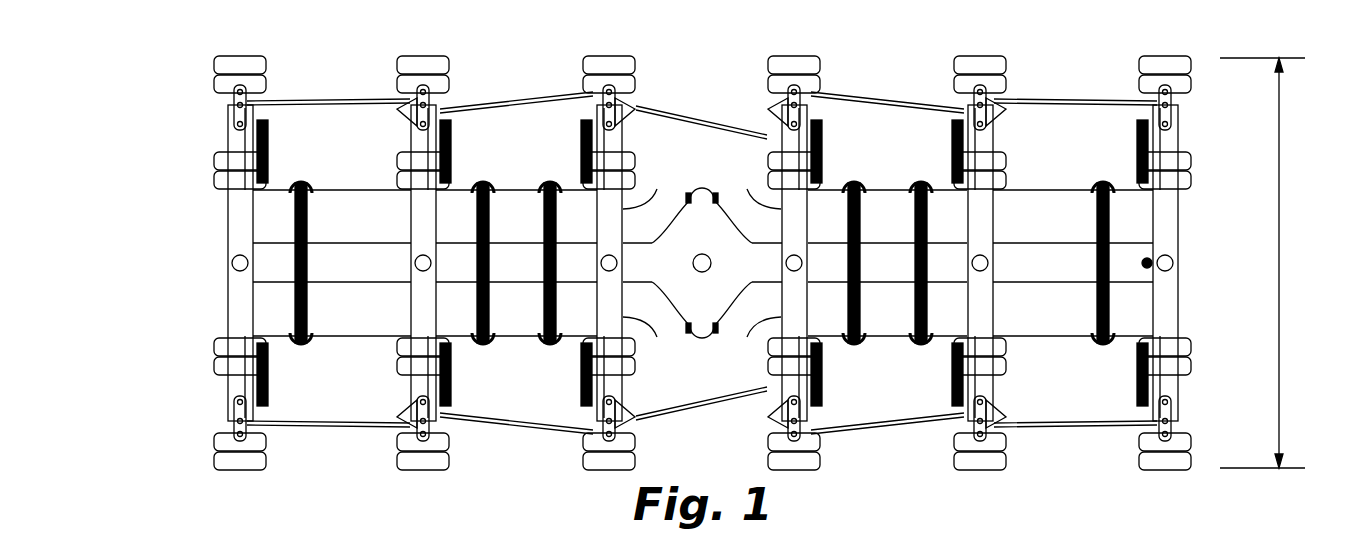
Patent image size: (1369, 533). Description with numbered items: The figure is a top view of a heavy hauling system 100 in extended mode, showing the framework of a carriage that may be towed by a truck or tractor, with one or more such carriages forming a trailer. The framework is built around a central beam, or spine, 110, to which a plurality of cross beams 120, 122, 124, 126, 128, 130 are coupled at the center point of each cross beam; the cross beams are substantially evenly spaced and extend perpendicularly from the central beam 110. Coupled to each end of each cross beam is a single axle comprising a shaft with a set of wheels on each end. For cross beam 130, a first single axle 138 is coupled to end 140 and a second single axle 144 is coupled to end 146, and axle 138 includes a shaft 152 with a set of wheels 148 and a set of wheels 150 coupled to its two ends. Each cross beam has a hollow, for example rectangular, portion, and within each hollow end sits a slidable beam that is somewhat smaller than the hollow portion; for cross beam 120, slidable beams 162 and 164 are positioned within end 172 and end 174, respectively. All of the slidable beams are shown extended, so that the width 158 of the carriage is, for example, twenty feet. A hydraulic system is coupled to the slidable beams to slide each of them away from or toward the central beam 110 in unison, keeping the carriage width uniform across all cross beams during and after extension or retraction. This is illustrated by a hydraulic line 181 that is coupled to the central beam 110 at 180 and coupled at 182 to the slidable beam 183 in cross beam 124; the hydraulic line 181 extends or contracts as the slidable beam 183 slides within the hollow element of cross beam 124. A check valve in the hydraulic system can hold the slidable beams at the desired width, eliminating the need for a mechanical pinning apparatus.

The heavy hauling system 100 is at (728, 56).
The central beam 110 is at (338, 243).
The cross beam 120 is at (227, 298).
The cross beam 122 is at (412, 296).
The cross beam 124 is at (625, 318).
The cross beam 126 is at (783, 316).
The cross beam 128 is at (994, 196).
The cross beam 130 is at (1181, 232).
The first single axle 138 is at (1183, 75).
The end of cross beam 140 is at (1192, 185).
The second single axle 144 is at (1189, 452).
The end of cross beam 146 is at (1192, 340).
The set of wheels 148 is at (1181, 58).
The set of wheels 150 is at (1181, 470).
The shaft 152 is at (1157, 142).
The width of the carriage 158 is at (1294, 263).
The slidable beam 162 is at (226, 132).
The slidable beam 164 is at (227, 405).
The end of cross beam 172 is at (225, 178).
The end of cross beam 174 is at (227, 343).
The coupling point on central beam 180 is at (541, 236).
The hydraulic line 181 is at (541, 200).
The coupling point on slidable beam 182 is at (581, 150).
The slidable beam 183 is at (623, 133).